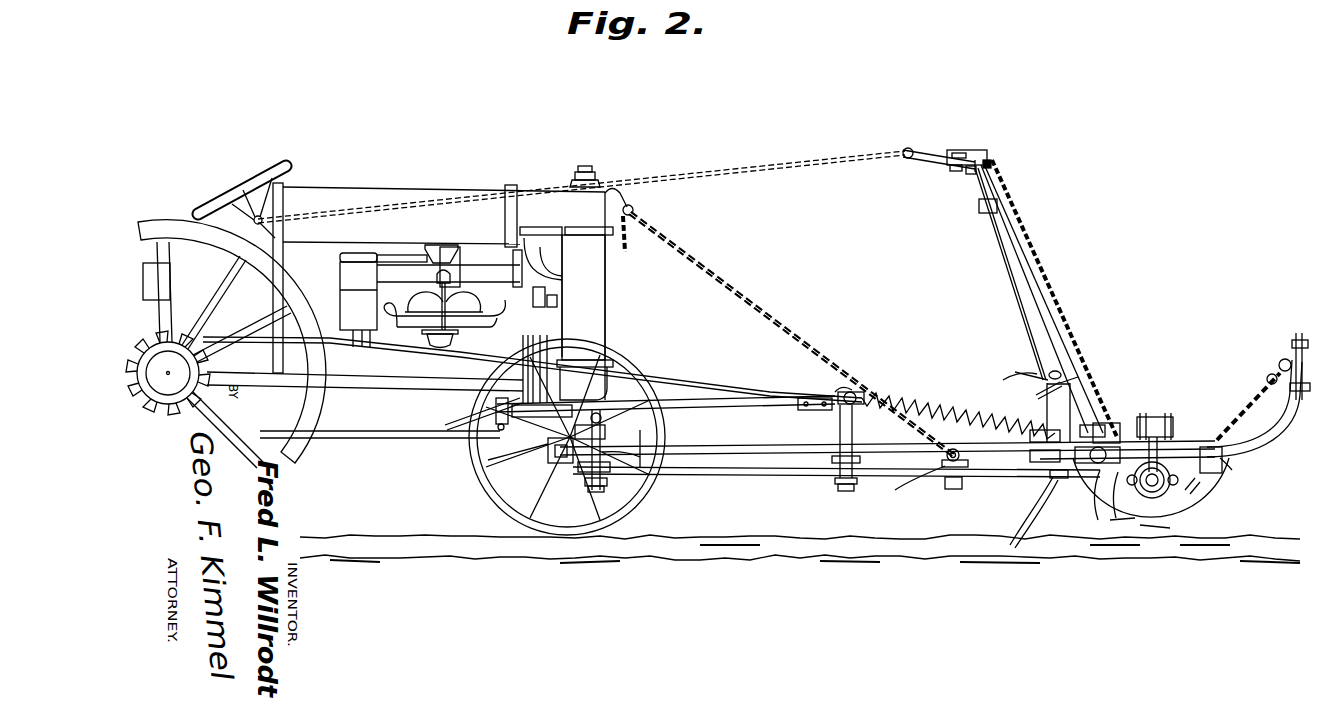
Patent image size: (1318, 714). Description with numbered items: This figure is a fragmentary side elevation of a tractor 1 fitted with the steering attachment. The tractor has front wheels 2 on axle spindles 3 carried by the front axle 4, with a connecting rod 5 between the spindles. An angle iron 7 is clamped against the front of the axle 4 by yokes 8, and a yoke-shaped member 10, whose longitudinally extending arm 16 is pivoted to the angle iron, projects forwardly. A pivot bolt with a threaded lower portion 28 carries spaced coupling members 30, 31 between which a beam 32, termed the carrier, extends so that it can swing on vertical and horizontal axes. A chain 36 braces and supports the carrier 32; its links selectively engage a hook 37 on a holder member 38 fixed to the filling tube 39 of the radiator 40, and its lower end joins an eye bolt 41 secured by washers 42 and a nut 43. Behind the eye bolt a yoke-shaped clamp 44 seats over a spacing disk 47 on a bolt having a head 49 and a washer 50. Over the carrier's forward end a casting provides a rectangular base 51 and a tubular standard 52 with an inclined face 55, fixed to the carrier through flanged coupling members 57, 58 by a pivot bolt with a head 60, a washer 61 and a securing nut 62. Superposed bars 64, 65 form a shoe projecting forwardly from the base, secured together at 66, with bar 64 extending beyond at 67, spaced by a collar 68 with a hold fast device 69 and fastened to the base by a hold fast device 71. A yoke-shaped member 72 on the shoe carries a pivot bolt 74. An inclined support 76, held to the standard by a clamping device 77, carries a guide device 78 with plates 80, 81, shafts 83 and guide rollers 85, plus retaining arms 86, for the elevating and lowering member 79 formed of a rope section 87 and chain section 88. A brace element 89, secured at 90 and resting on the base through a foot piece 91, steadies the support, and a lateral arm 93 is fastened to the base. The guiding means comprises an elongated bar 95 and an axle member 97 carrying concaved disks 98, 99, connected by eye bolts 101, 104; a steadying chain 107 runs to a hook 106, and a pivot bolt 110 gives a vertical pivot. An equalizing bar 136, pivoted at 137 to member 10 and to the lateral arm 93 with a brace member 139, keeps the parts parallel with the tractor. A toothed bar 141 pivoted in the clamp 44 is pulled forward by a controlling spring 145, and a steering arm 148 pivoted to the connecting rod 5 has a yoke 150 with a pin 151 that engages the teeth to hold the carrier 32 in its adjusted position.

The tractor 1 is at (366, 198).
The front wheels 2 is at (468, 460).
The axle spindles 3 is at (522, 420).
The front axle 4 is at (550, 462).
The connecting rod 5 is at (496, 418).
The angle iron 7 is at (587, 488).
The yokes 8 is at (520, 470).
The yoke-shaped member 10 is at (606, 437).
The longitudinally extending arm 16 is at (562, 470).
The threaded lower terminal portion 28 is at (596, 494).
The coupling member 30 is at (612, 454).
The coupling member 31 is at (606, 474).
The beam 32 is at (772, 480).
The chain 36 is at (735, 285).
The hook 37 is at (636, 200).
The holder member 38 is at (609, 188).
The filling tube 39 is at (590, 168).
The radiator 40 is at (600, 290).
The eye bolt 41 is at (912, 484).
The washers 42 is at (957, 449).
The nut 43 is at (950, 490).
The yoke-shaped clamp 44 is at (854, 431).
The spacing disk 47 is at (832, 458).
The head 49 is at (845, 491).
The washer 50 is at (836, 483).
The rectangular base 51 is at (1106, 420).
The tubular standard 52 is at (1050, 410).
The inclined face 55 is at (1003, 380).
The flanged coupling member 57 is at (1030, 490).
The flanged coupling member 58 is at (1032, 516).
The head 60 is at (1055, 371).
The washer 61 is at (1022, 365).
The securing nut 62 is at (1058, 480).
The bar 64 is at (1196, 440).
The bar 65 is at (1258, 455).
The secured forward ends 66 is at (1300, 402).
The projecting end 67 is at (1297, 336).
The spacing collar 68 is at (1236, 427).
The hold fast device 69 is at (1234, 471).
The hold fast device 71 is at (1135, 488).
The yoke-shaped member 72 is at (1146, 412).
The pivot bolt 74 is at (1160, 436).
The support 76 is at (945, 165).
The yoke-shaped clamping device 77 is at (1036, 394).
The guide device 78 is at (1000, 164).
The elevating and lowering member 79 is at (881, 160).
The plate 80 is at (983, 150).
The plate 81 is at (956, 170).
The shafts 83 is at (965, 148).
The guide roller 85 is at (992, 160).
The retaining arms 86 is at (908, 148).
The section 87 is at (385, 208).
The section 88 is at (1100, 412).
The brace element 89 is at (1018, 324).
The securing point 90 is at (983, 214).
The foot piece 91 is at (1030, 437).
The lateral arm 93 is at (1038, 464).
The elongated bar 95 is at (1204, 449).
The axle member 97 is at (1156, 492).
The concaved disk 98 is at (1165, 386).
The concaved disk 99 is at (1118, 555).
The eye bolt 101 is at (1140, 530).
The eye bolt 104 is at (1180, 486).
The hook 106 is at (1279, 366).
The steadying chain 107 is at (1262, 394).
The pivot bolt 110 is at (1162, 412).
The equalizing bar 136 is at (675, 420).
The pivotal connection 137 is at (604, 420).
The brace member 139 is at (1100, 495).
The toothed bar 141 is at (828, 412).
The controlling spring 145 is at (927, 407).
The steering arm 148 is at (715, 410).
The yoke 150 is at (824, 392).
The pin 151 is at (856, 390).